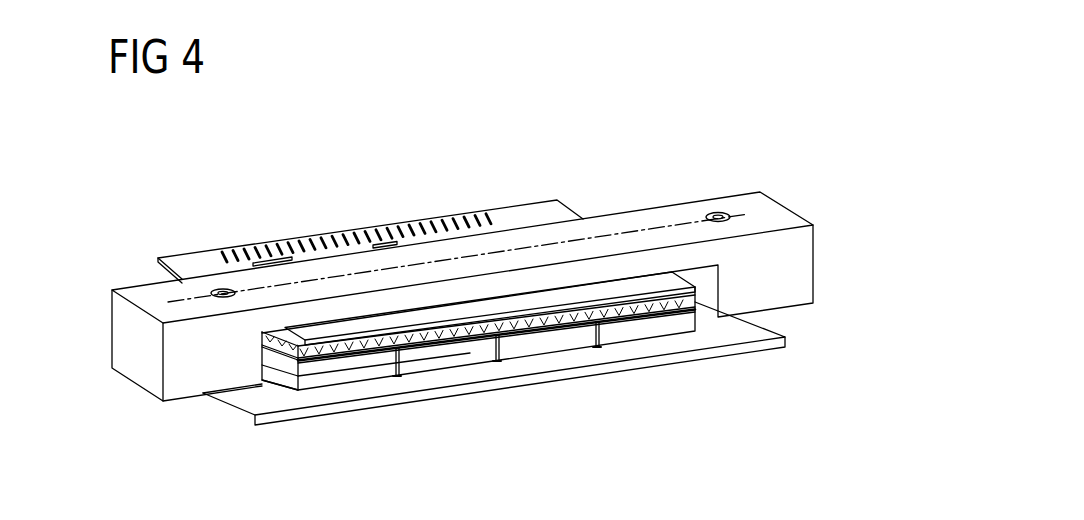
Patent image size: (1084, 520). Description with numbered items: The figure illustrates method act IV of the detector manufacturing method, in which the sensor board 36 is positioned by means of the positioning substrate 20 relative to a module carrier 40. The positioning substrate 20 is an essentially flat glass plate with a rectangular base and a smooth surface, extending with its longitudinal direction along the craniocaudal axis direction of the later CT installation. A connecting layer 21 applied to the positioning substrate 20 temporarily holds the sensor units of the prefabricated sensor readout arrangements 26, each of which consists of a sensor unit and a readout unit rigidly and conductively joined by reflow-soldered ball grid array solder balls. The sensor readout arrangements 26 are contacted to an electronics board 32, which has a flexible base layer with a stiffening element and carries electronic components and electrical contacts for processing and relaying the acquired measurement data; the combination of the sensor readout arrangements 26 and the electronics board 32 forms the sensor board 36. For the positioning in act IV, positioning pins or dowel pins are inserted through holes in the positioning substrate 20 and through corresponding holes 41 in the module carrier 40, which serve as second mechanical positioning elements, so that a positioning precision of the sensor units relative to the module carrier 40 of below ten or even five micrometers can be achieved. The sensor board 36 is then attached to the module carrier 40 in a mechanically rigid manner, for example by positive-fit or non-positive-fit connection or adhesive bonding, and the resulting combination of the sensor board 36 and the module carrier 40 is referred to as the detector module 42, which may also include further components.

The method act IV is at (208, 210).
The positioning substrate 20 is at (243, 402).
The connecting layer 21 is at (333, 392).
The sensor readout arrangements 26 is at (393, 370).
The electronics board 32 is at (585, 198).
The sensor board 36 is at (664, 311).
The module carrier 40 is at (663, 217).
The holes 41 is at (718, 213).
The detector module 42 is at (830, 197).